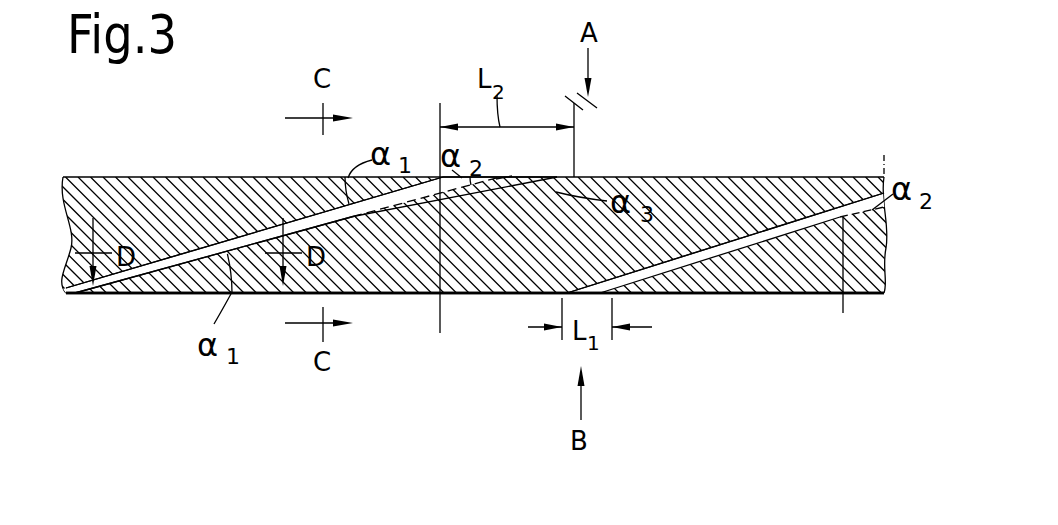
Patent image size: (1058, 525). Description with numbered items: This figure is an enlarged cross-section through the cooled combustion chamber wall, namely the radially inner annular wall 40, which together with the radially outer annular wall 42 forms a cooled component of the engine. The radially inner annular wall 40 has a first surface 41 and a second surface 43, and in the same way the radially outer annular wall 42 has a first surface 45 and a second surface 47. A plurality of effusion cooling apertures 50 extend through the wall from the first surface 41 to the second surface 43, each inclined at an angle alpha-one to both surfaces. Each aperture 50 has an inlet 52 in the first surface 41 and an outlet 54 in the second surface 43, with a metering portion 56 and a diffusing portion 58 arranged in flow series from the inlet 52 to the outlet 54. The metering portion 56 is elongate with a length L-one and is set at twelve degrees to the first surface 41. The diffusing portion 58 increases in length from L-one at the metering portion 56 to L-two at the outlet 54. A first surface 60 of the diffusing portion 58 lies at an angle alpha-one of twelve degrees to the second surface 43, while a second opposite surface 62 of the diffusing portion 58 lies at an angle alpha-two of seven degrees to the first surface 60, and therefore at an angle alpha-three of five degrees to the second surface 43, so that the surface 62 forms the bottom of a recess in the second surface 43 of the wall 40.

The radially inner annular wall 40 is at (843, 177).
The radially outer annular wall 42 is at (503, 194).
The second surface 43 is at (755, 177).
The second surface 47 is at (473, 136).
The first surface 41 is at (824, 294).
The first surface 45 is at (475, 355).
The effusion cooling aperture 50 is at (296, 222).
The inlet 52 is at (80, 296).
The outlet 54 is at (497, 177).
The metering portion 56 is at (215, 225).
The diffusing portion 58 is at (647, 233).
The first surface of the diffusing portion 60 is at (393, 209).
The second opposite surface of the diffusing portion 62 is at (505, 183).